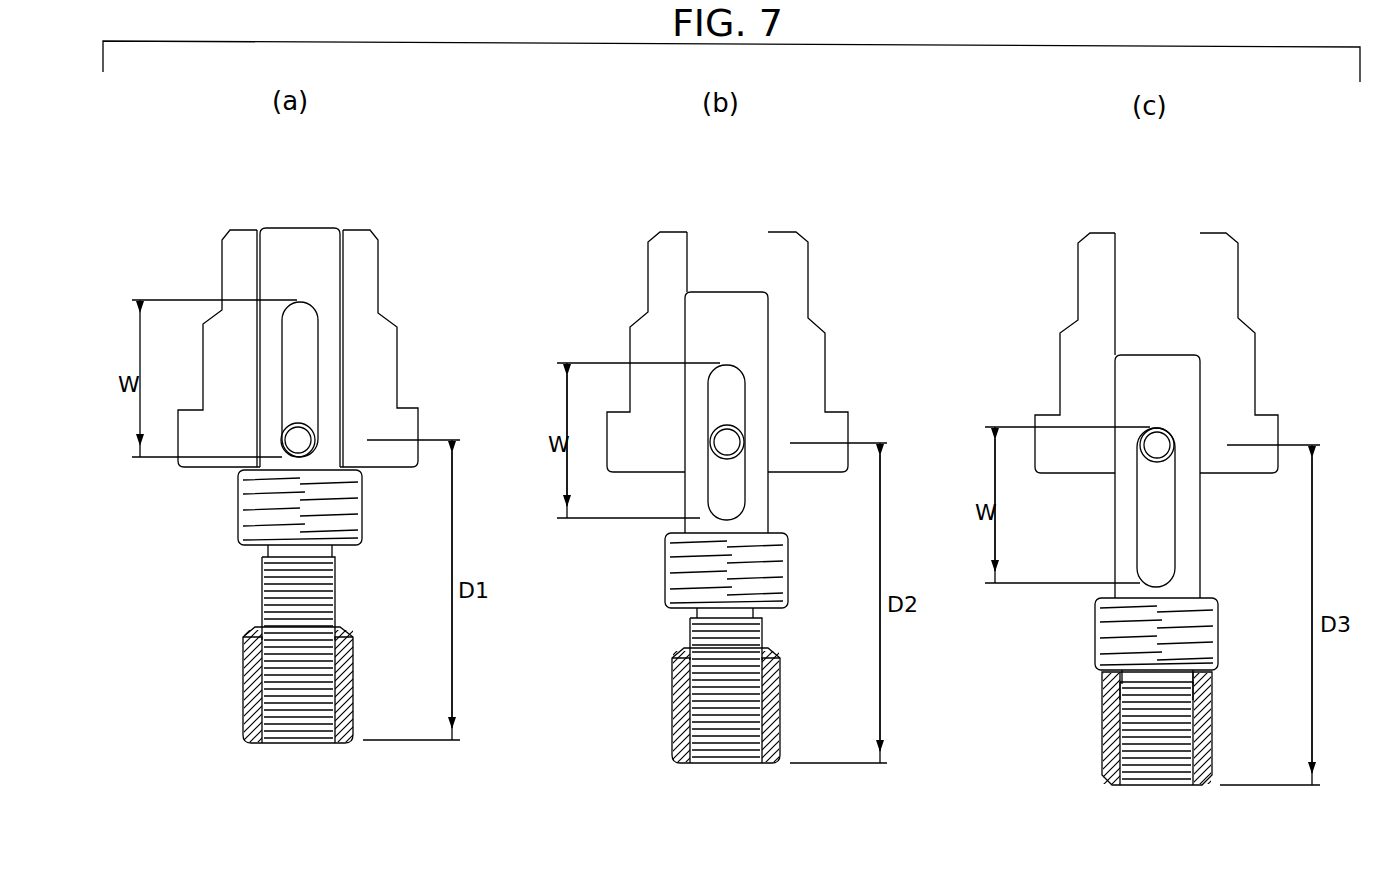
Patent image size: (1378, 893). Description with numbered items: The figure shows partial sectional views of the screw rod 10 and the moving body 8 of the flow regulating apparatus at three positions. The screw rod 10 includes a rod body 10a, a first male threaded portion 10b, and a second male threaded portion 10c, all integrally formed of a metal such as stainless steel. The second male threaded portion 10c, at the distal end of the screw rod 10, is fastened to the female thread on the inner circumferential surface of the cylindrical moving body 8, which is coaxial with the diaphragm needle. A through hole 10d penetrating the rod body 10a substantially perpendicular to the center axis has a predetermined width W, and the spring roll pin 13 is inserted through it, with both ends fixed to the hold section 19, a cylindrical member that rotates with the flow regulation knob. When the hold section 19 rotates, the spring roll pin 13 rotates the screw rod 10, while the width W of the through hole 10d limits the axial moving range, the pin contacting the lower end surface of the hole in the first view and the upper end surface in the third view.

The screw rod 10 is at (318, 226).
The rod body 10a is at (330, 260).
The first male threaded portion 10b is at (238, 502).
The second male threaded portion 10c is at (262, 605).
The through hole 10d is at (303, 343).
The spring roll pin 13 is at (300, 430).
The hold section 19 is at (240, 258).
The moving body 8 is at (243, 675).